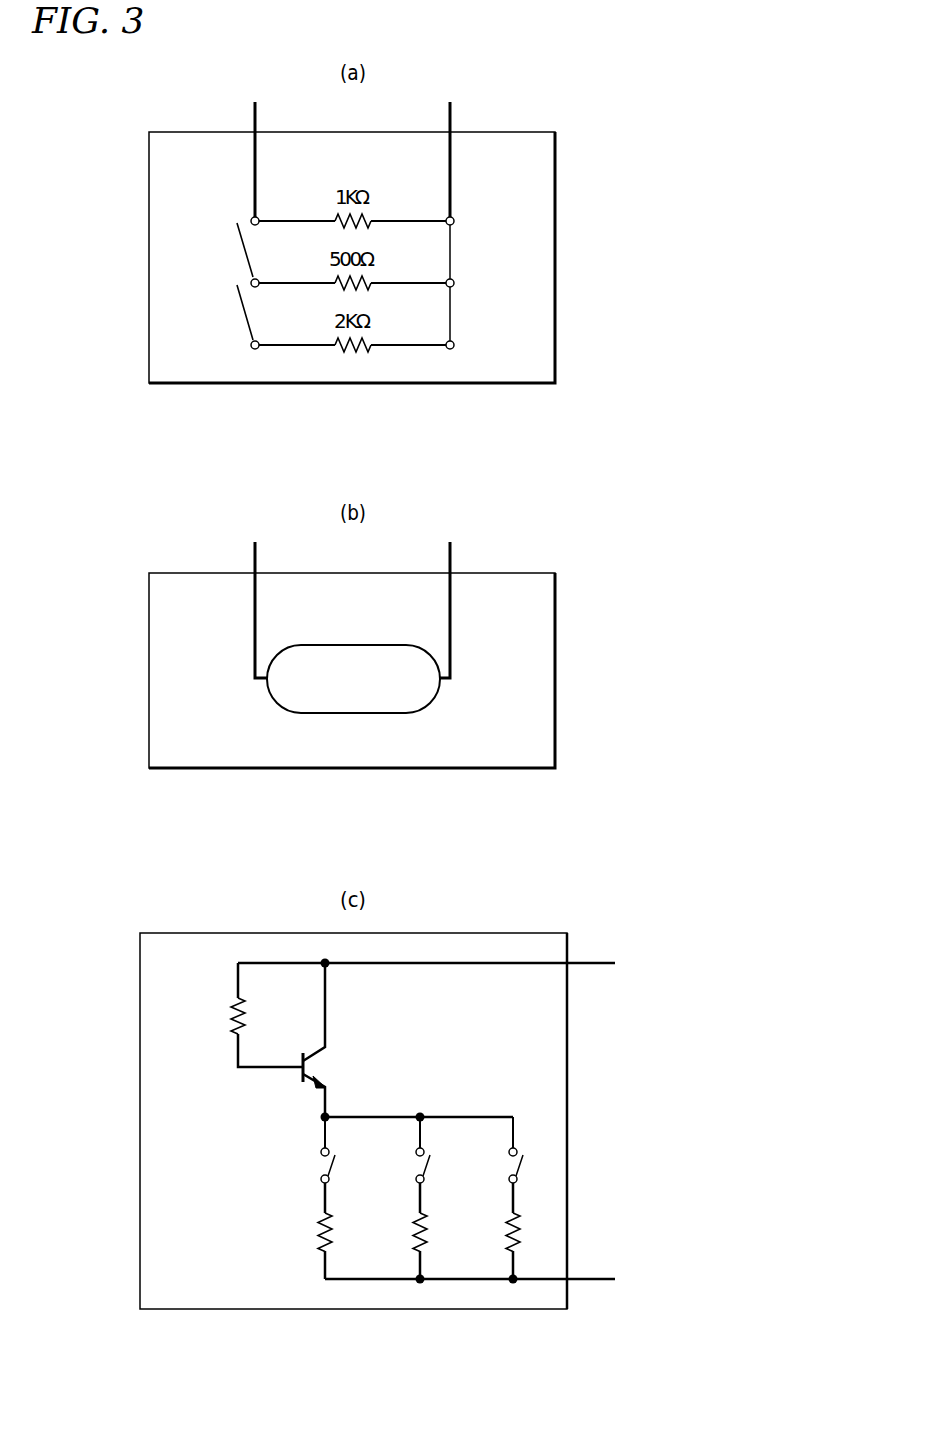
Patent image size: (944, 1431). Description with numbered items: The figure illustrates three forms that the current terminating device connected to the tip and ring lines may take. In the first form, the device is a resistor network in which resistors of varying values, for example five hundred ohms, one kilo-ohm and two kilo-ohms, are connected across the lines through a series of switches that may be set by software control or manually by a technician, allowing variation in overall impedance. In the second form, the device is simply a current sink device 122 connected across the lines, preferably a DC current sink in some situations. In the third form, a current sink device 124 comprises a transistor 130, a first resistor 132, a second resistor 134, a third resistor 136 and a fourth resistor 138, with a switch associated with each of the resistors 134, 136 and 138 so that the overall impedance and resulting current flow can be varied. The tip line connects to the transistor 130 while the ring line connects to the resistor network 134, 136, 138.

The current sink device 122 is at (373, 712).
The current sink device 124 is at (237, 1167).
The transistor 130 is at (331, 1070).
The first resistor 132 is at (230, 1013).
The second resistor 134 is at (319, 1229).
The third resistor 136 is at (414, 1229).
The fourth resistor 138 is at (509, 1229).